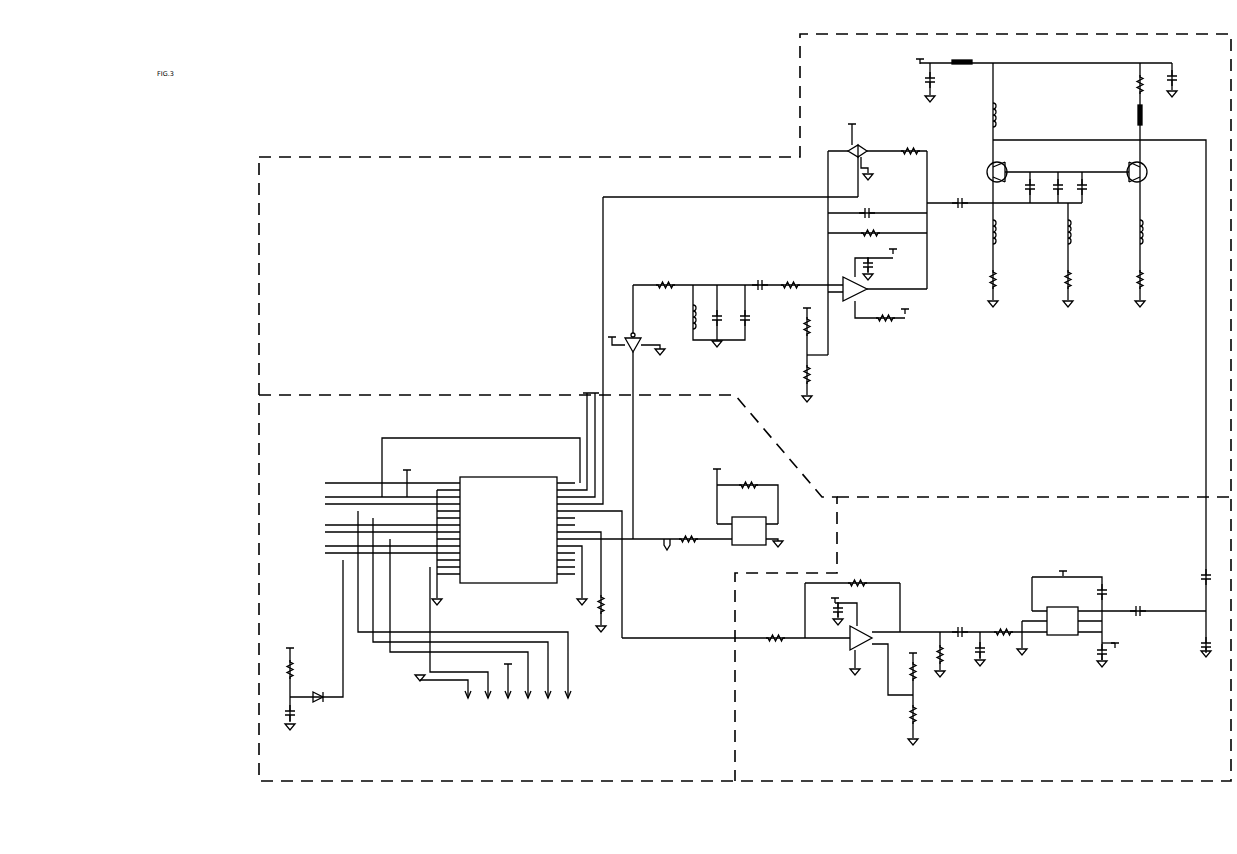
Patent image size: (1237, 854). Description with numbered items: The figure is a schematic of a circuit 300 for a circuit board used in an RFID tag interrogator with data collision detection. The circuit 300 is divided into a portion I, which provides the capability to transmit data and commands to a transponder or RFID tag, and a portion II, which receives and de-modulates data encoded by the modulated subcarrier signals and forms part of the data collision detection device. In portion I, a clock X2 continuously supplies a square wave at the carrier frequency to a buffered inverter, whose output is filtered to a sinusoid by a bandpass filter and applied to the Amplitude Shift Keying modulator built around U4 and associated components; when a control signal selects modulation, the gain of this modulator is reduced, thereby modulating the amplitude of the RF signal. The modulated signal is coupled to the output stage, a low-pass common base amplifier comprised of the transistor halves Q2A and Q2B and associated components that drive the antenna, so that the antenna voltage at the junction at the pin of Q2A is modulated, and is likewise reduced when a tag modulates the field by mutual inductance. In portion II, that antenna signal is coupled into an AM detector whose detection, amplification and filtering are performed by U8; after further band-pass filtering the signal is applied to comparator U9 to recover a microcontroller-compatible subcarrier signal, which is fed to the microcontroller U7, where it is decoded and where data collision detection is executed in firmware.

The circuit 300 is at (567, 134).
The portion I is at (904, 342).
The portion II is at (922, 629).
The microcontroller U7 is at (506, 531).
The AM detector integrated circuit U8 is at (1062, 623).
The comparator U9 is at (872, 646).
The ASK modulator circuit U4 is at (877, 295).
The clock integrated circuit X2 is at (746, 509).
The output stage transistor Q2A is at (1033, 170).
The output stage transistor Q2B is at (1156, 172).